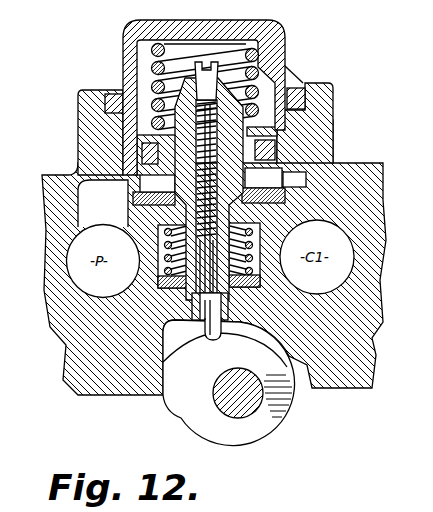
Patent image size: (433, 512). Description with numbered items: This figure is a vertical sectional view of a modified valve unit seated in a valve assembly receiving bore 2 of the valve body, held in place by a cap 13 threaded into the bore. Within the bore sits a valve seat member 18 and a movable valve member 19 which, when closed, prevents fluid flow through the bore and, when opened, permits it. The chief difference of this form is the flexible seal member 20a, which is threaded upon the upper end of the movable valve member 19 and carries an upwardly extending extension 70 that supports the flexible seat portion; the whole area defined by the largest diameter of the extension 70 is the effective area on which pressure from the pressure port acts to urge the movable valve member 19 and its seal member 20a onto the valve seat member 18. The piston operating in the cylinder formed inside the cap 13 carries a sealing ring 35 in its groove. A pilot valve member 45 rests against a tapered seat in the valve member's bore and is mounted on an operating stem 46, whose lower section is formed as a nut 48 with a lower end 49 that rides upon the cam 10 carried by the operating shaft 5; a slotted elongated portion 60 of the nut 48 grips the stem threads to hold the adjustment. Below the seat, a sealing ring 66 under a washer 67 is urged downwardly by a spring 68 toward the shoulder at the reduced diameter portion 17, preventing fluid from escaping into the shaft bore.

The valve assembly receiving bore 2 is at (318, 166).
The operating shaft 5 is at (240, 420).
The cam 10 is at (180, 413).
The cap 13 is at (285, 43).
The further reduced diameter portion 17 is at (228, 293).
The valve seat member 18 is at (283, 198).
The movable valve member 19 is at (272, 133).
The flexible seal member 20a is at (256, 106).
The sealing ring 35 is at (148, 153).
The pilot valve member 45 is at (216, 73).
The operating stem 46 is at (172, 198).
The nut 48 is at (203, 314).
The lower end of nut 49 is at (212, 334).
The elongated portion 60 is at (222, 268).
The sealing ring 66 is at (180, 284).
The washer 67 is at (160, 277).
The spring 68 is at (158, 258).
The extension 70 is at (187, 84).